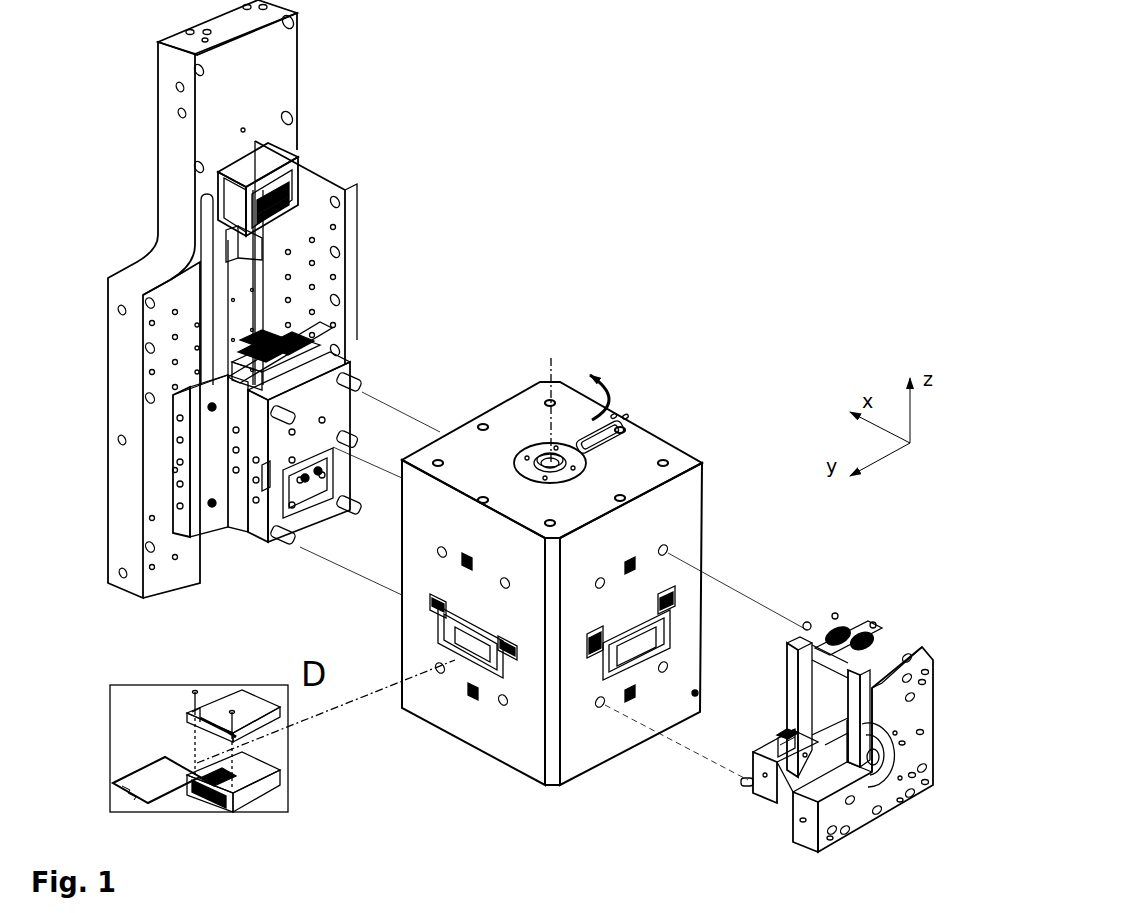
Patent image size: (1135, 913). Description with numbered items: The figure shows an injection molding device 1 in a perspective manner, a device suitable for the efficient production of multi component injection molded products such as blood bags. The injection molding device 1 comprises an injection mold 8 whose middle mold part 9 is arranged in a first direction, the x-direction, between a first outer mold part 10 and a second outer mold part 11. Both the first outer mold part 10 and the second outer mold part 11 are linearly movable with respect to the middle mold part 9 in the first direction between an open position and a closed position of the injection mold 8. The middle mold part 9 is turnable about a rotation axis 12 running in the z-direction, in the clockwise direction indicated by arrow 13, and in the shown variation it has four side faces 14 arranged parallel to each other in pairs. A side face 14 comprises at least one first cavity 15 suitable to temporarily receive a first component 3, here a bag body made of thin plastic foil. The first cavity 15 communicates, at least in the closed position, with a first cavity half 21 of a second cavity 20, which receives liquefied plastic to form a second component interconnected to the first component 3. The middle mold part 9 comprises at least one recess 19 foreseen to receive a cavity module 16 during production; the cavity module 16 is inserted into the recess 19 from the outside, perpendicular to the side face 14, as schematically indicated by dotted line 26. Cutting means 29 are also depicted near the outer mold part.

The injection molding device 1 is at (740, 297).
The first component 3 is at (148, 775).
The injection mold 8 is at (797, 343).
The middle mold part 9 is at (678, 400).
The first outer mold part 10 is at (873, 851).
The second outer mold part 11 is at (378, 313).
The rotation axis 12 is at (553, 360).
The turning direction 13 is at (602, 373).
The side face 14 is at (520, 740).
The first cavity 15 is at (183, 737).
The cavity module 16 is at (695, 732).
The recess 19 is at (427, 632).
The second cavity 20 is at (653, 620).
The first cavity half 21 is at (193, 772).
The direction of insert 26 is at (343, 713).
The cutting means 29 is at (782, 732).